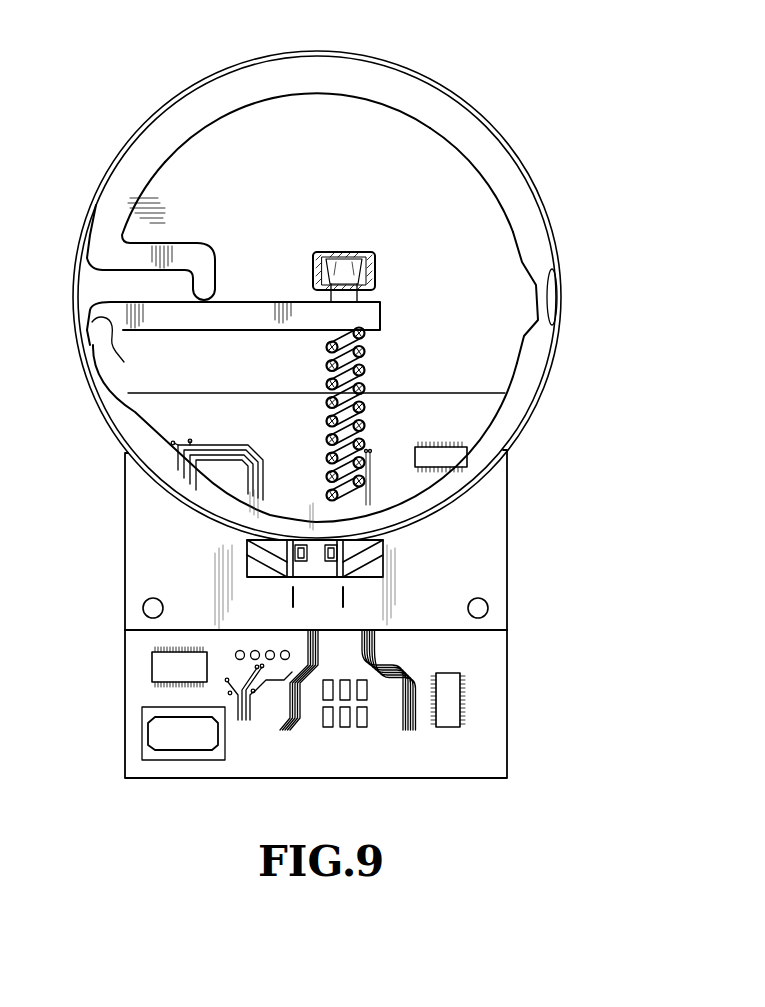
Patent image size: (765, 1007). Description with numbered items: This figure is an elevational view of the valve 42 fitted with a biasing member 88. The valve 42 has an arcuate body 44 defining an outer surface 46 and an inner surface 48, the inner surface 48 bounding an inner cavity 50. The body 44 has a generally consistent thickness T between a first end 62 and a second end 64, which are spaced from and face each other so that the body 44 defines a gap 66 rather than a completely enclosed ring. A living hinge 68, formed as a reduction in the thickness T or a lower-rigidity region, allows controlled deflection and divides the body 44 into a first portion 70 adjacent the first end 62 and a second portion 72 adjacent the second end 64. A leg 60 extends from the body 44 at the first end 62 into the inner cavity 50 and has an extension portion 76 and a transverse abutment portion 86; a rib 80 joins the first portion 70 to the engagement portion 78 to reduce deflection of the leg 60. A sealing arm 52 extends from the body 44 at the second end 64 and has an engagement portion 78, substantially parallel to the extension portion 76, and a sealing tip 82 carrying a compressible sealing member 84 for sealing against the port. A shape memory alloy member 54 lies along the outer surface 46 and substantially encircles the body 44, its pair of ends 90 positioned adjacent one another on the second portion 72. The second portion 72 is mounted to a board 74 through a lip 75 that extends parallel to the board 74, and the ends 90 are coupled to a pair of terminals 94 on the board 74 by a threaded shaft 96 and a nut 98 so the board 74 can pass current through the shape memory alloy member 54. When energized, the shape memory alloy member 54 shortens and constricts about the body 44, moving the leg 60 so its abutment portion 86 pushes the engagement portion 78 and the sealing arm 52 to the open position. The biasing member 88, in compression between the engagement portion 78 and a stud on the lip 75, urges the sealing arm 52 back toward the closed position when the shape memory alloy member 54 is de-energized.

The valve 42 is at (567, 44).
The body 44 is at (176, 92).
The outer surface 46 is at (133, 136).
The inner surface 48 is at (512, 346).
The inner cavity 50 is at (510, 230).
The sealing arm 52 is at (274, 341).
The shape memory alloy member 54 is at (546, 208).
The leg 60 is at (219, 244).
The first end 62 is at (91, 265).
The second end 64 is at (88, 297).
The gap 66 is at (148, 272).
The living hinge 68 is at (540, 305).
The first portion 70 is at (387, 85).
The second portion 72 is at (218, 486).
The board 74 is at (152, 778).
The lip 75 is at (512, 560).
The extension portion 76 is at (150, 252).
The engagement portion 78 is at (232, 320).
The rib 80 is at (148, 196).
The sealing tip 82 is at (350, 266).
The sealing member 84 is at (378, 262).
The abutment portion 86 is at (210, 290).
The biasing member 88 is at (366, 346).
The ends 90 is at (301, 571).
The terminals 94 is at (242, 548).
The threaded shaft 96 is at (322, 542).
The nut 98 is at (300, 537).
The thickness T is at (462, 196).